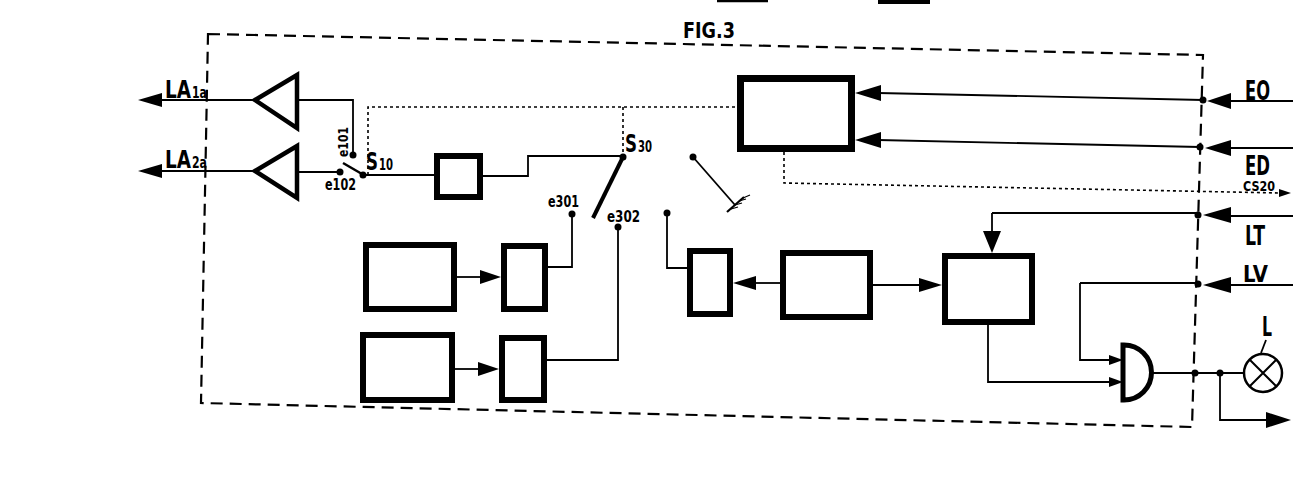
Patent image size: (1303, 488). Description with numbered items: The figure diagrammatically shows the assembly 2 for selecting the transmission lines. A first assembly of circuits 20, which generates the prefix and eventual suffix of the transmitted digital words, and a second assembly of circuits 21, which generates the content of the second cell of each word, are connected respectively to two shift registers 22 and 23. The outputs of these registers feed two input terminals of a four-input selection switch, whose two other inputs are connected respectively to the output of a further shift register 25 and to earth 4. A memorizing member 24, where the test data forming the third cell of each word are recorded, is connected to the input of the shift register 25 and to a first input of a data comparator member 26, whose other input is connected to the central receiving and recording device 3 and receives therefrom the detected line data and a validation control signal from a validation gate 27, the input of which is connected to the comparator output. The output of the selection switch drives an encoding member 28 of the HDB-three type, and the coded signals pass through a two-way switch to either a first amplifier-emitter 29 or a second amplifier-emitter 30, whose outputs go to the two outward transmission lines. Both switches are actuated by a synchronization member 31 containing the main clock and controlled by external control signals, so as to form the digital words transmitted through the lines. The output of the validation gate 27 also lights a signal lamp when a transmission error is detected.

The control module 2 is at (198, 27).
The central receiving and recording device 3 is at (674, 227).
The ground terminal 4 is at (713, 178).
The first assembly of circuits 20 is at (363, 277).
The second assembly of circuits 21 is at (360, 369).
The shift register 22 is at (518, 242).
The shift register 23 is at (547, 392).
The memorizing member 24 is at (823, 321).
The shift register 25 is at (718, 318).
The data comparator member 26 is at (950, 326).
The validation gate 27 is at (1120, 400).
The encoding member 28 is at (467, 153).
The amplifier-emitter 29 is at (268, 91).
The amplifier-emitter 30 is at (264, 187).
The synchronization member 31 is at (737, 77).